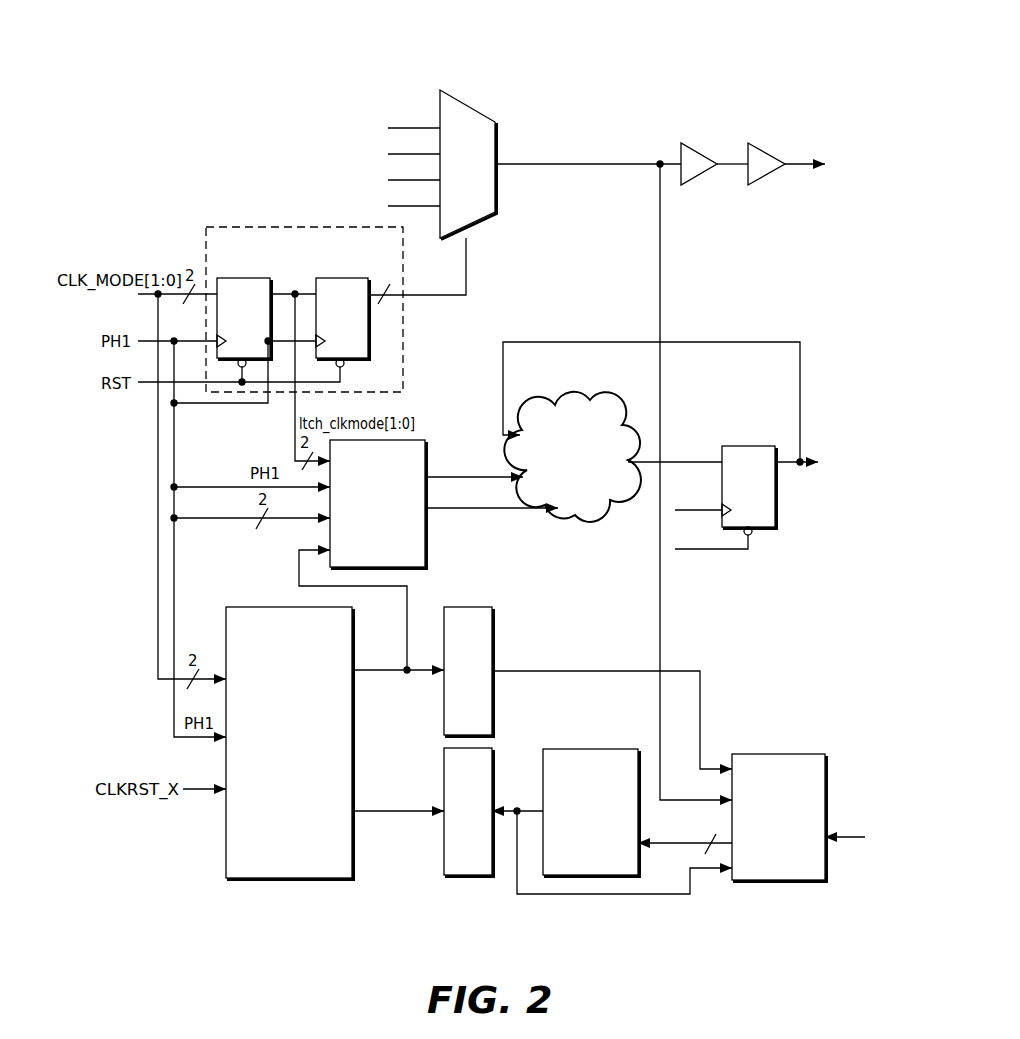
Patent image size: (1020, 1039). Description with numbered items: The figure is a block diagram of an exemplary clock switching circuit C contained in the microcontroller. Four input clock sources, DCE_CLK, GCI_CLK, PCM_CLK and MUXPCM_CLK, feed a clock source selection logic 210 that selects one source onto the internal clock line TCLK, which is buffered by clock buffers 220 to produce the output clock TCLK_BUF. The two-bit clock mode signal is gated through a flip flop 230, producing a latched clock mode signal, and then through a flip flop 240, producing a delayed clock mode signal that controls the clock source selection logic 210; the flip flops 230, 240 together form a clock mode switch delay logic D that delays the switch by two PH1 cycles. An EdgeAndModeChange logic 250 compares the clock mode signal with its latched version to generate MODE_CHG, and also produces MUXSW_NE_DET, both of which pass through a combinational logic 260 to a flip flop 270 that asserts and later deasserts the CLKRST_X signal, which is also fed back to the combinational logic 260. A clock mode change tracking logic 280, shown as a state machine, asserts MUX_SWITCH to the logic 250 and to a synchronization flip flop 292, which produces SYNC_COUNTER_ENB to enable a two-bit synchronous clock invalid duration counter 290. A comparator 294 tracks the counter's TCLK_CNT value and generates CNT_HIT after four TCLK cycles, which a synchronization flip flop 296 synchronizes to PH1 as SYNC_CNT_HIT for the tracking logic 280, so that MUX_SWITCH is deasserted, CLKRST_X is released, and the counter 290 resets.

The clock source selection logic 210 is at (480, 95).
The clock buffers 220 is at (697, 187).
The flip flop 230 is at (237, 276).
The flip flop 240 is at (323, 276).
The EdgeAndModeChange logic 250 is at (419, 438).
The combinational logic 260 is at (573, 390).
The flip flop 270 is at (778, 530).
The clock mode change tracking logic 280 is at (301, 881).
The synchronous clock invalid duration counter 290 is at (798, 883).
The synchronization flip flop 292 is at (480, 605).
The comparator 294 is at (601, 749).
The synchronization flip flop 296 is at (459, 879).
The clock switching circuit C is at (548, 34).
The clock mode switch delay logic D is at (208, 222).